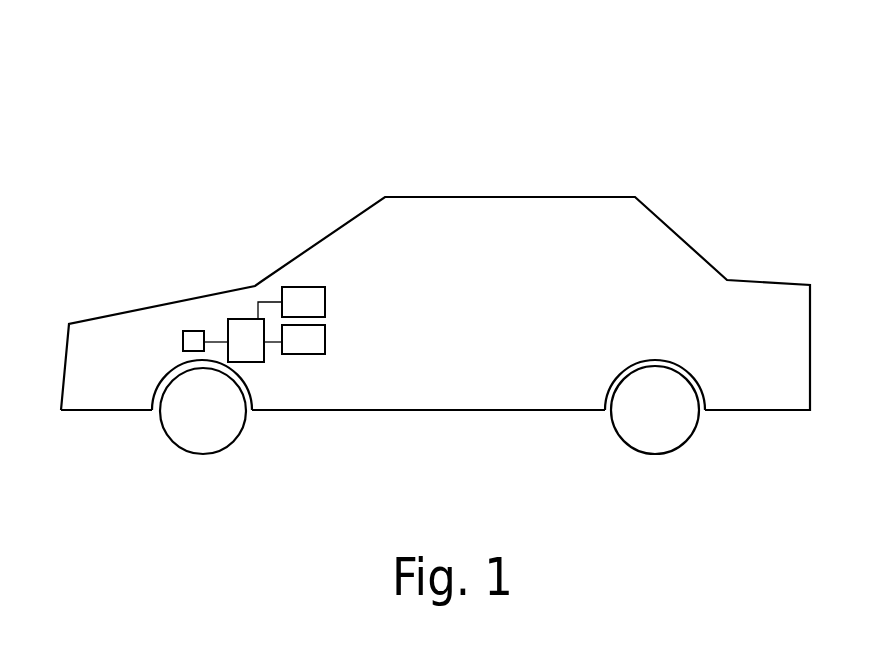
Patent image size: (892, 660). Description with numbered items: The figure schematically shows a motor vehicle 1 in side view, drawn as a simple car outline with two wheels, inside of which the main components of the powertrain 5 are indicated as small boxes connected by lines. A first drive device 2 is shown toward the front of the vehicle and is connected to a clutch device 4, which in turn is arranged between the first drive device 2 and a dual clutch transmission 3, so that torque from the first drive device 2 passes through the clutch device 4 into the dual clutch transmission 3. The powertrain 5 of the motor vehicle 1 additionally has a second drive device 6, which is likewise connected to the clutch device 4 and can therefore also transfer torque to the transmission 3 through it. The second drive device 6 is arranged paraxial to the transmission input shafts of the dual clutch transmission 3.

The motor vehicle 1 is at (172, 94).
The first drive device 2 is at (183, 340).
The dual clutch transmission 3 is at (294, 355).
The clutch device 4 is at (240, 319).
The powertrain 5 is at (378, 310).
The second drive device 6 is at (303, 287).